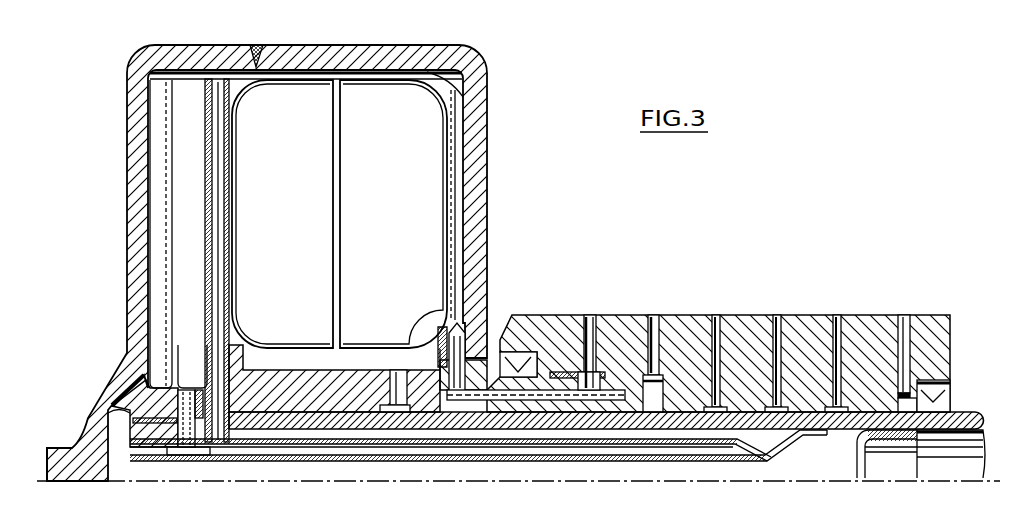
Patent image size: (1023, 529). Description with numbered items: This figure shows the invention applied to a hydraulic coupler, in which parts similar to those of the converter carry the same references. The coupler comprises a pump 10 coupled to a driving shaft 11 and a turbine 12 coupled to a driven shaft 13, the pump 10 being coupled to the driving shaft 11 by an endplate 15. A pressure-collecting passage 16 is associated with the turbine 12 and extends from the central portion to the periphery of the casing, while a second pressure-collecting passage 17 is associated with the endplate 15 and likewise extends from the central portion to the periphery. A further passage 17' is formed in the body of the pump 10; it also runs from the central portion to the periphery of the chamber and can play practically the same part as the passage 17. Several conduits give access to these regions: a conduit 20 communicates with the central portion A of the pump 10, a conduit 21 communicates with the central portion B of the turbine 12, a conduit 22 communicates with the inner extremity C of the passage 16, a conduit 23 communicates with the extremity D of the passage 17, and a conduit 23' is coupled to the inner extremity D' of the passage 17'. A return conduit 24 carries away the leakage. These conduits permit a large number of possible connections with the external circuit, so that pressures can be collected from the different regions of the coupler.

The pump 10 is at (392, 223).
The driving shaft 11 is at (69, 460).
The turbine 12 is at (296, 223).
The driven shaft 13 is at (582, 425).
The endplate 15 is at (138, 161).
The pressure-collecting passage 16 is at (226, 223).
The second pressure-collecting passage 17 is at (160, 234).
The further passage 17' is at (454, 205).
The conduit 20 is at (656, 326).
The conduit 21 is at (780, 324).
The conduit 22 is at (719, 324).
The conduit 23 is at (849, 353).
The conduit 23' is at (601, 343).
The return conduit 24 is at (906, 324).
The central portion of the pump A is at (401, 384).
The central portion of the turbine B is at (185, 389).
The inner extremity of passage 16 C is at (226, 430).
The extremity of passage 17 D is at (117, 385).
The inner extremity of passage 17' D' is at (481, 341).